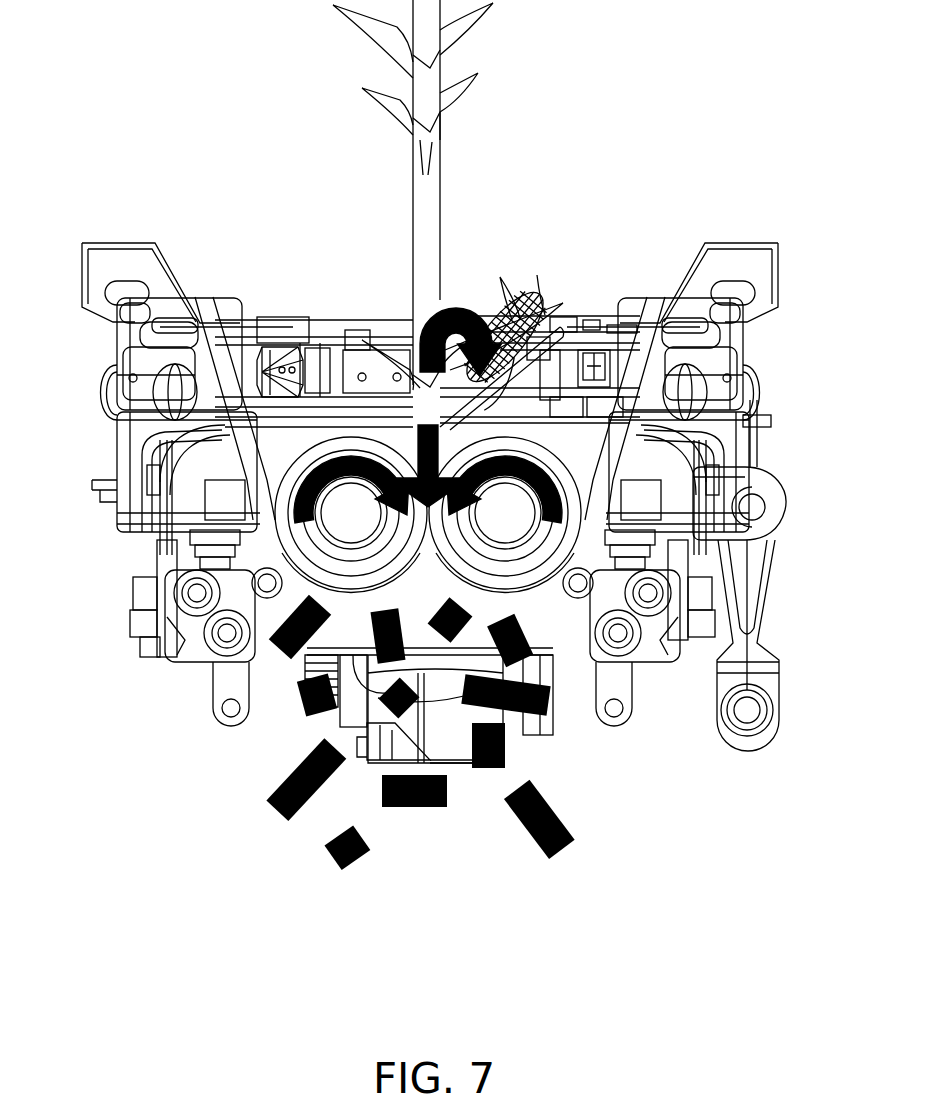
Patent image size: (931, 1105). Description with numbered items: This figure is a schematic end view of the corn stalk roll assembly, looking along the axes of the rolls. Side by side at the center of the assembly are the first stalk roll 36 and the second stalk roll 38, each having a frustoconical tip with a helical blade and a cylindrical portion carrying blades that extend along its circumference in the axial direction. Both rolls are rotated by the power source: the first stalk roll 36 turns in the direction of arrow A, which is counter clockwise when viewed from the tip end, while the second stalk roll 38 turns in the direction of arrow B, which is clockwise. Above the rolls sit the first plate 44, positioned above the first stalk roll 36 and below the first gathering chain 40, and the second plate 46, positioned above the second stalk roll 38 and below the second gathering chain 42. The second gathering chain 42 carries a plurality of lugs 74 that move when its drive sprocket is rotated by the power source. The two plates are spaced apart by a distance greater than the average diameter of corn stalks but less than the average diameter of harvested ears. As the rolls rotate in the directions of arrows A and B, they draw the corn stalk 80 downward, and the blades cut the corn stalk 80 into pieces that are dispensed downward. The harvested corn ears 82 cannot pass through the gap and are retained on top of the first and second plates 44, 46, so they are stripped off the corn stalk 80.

The first stalk roll 36 is at (578, 478).
The second stalk roll 38 is at (177, 592).
The first gathering chain 40 is at (560, 440).
The second gathering chain 42 is at (232, 372).
The first plate 44 is at (608, 420).
The second plate 46 is at (375, 425).
The lugs 74 is at (273, 365).
The corn stalk 80 is at (428, 188).
The harvested corn ears 82 is at (547, 300).
The arrow A is at (575, 440).
The arrow B is at (323, 368).